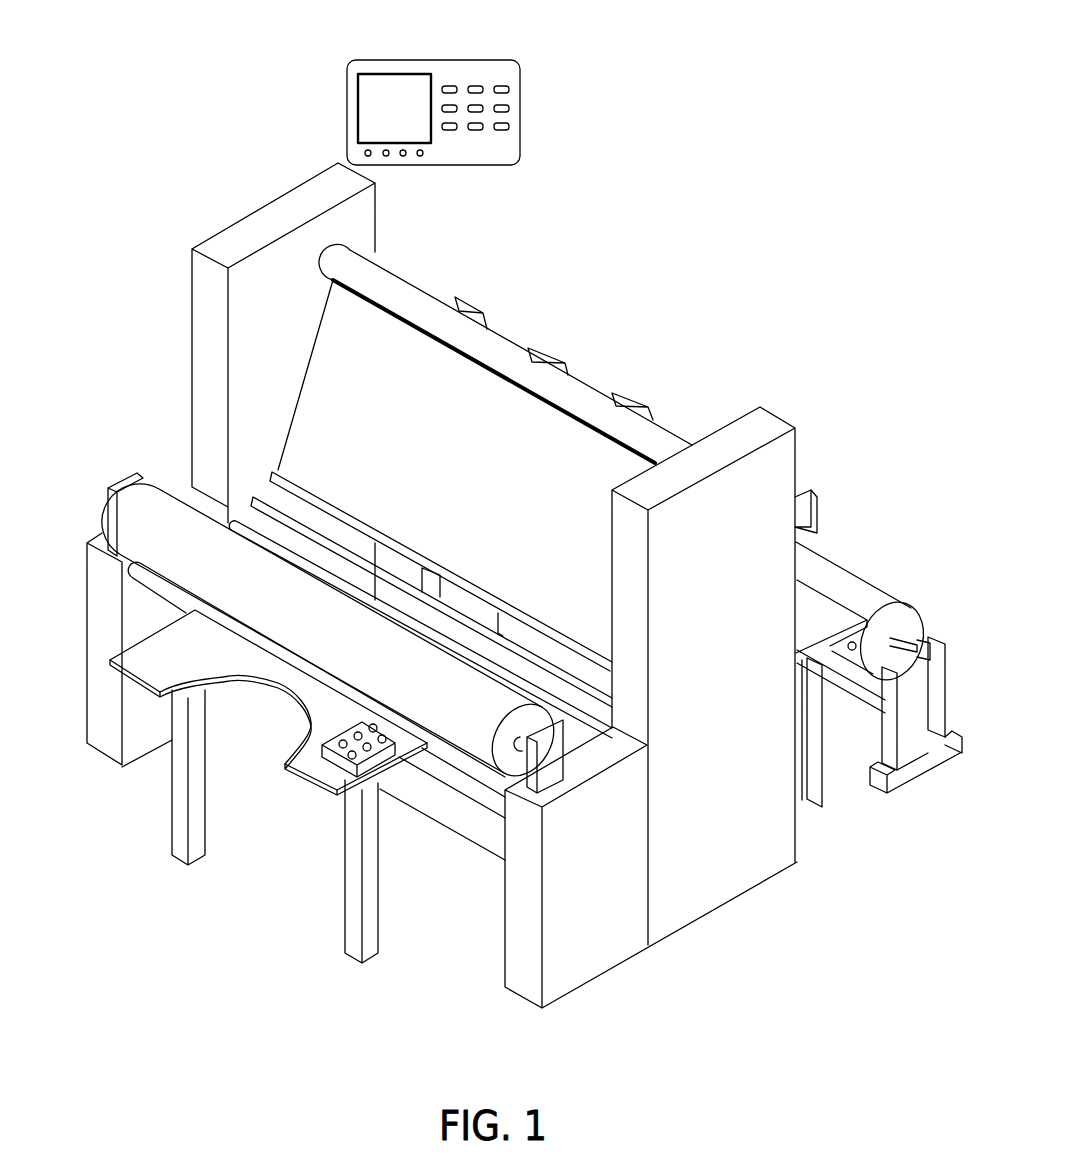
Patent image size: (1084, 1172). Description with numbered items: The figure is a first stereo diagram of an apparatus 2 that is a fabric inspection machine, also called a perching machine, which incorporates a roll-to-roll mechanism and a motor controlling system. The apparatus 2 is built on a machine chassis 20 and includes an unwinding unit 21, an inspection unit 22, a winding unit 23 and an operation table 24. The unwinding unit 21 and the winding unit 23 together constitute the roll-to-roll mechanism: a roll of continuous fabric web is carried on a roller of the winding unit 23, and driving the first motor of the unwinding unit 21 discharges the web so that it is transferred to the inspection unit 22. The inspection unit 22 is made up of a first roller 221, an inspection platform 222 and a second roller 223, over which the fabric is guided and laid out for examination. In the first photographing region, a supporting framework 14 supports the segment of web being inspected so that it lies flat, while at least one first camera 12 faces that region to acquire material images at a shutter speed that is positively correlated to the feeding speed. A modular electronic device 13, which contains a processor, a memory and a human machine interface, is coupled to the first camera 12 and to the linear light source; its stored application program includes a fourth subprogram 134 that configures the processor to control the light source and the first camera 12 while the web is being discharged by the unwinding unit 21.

The apparatus 2 is at (742, 262).
The first camera 12 is at (538, 345).
The modular electronic device 13 is at (515, 56).
The fourth subprogram 134 is at (507, 108).
The supporting framework 14 is at (840, 620).
The machine chassis 20 is at (765, 405).
The unwinding unit 21 is at (855, 700).
The inspection unit 22 is at (110, 334).
The first roller 221 is at (345, 253).
The inspection platform 222 is at (315, 406).
The second roller 223 is at (240, 520).
The winding unit 23 is at (150, 505).
The operation table 24 is at (272, 706).